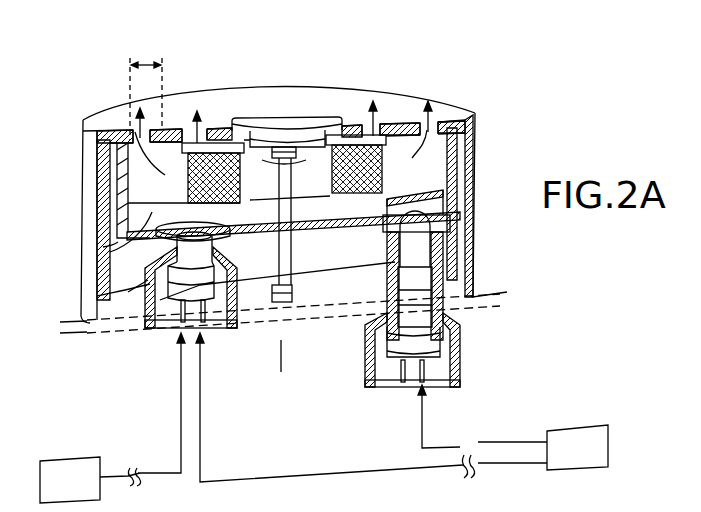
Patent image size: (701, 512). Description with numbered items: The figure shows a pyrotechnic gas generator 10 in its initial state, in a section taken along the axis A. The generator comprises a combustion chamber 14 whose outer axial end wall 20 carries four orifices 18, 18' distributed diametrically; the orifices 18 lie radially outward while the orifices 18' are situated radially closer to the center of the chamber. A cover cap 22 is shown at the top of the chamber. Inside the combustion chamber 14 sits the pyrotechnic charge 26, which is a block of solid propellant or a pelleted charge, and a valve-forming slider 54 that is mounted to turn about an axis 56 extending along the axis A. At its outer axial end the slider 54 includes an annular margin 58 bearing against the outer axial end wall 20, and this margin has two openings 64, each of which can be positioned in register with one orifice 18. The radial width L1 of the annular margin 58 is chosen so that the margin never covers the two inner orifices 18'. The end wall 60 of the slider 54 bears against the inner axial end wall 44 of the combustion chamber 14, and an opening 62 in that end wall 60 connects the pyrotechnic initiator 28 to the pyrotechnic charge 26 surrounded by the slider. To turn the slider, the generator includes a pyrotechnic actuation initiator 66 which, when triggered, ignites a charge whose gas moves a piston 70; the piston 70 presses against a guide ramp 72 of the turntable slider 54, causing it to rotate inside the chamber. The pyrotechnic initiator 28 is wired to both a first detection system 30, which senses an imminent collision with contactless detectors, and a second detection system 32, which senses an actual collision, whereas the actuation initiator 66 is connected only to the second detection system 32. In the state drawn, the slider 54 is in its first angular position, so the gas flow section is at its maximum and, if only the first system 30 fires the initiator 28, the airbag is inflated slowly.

The gas generator 10 is at (488, 101).
The combustion chamber 14 is at (466, 177).
The orifices 18 is at (282, 122).
The orifices 18' is at (278, 99).
The outer axial end wall 20 is at (82, 118).
The cover cap 22 is at (271, 134).
The pyrotechnic charge 26 is at (356, 147).
The pyrotechnic initiator 28 is at (152, 329).
The first detection system 30 is at (82, 491).
The second detection system 32 is at (589, 458).
The inner axial end wall 44 is at (352, 242).
The valve-forming slider 54 is at (104, 188).
The axis 56 is at (289, 268).
The annular margin 58 is at (418, 172).
The end wall 60 is at (150, 214).
The opening 62 is at (144, 257).
The openings 64 is at (452, 145).
The pyrotechnic actuation initiator 66 is at (438, 343).
The piston 70 is at (441, 288).
The guide ramp 72 is at (446, 216).
The radial width L1 is at (146, 92).
The axis A is at (281, 362).